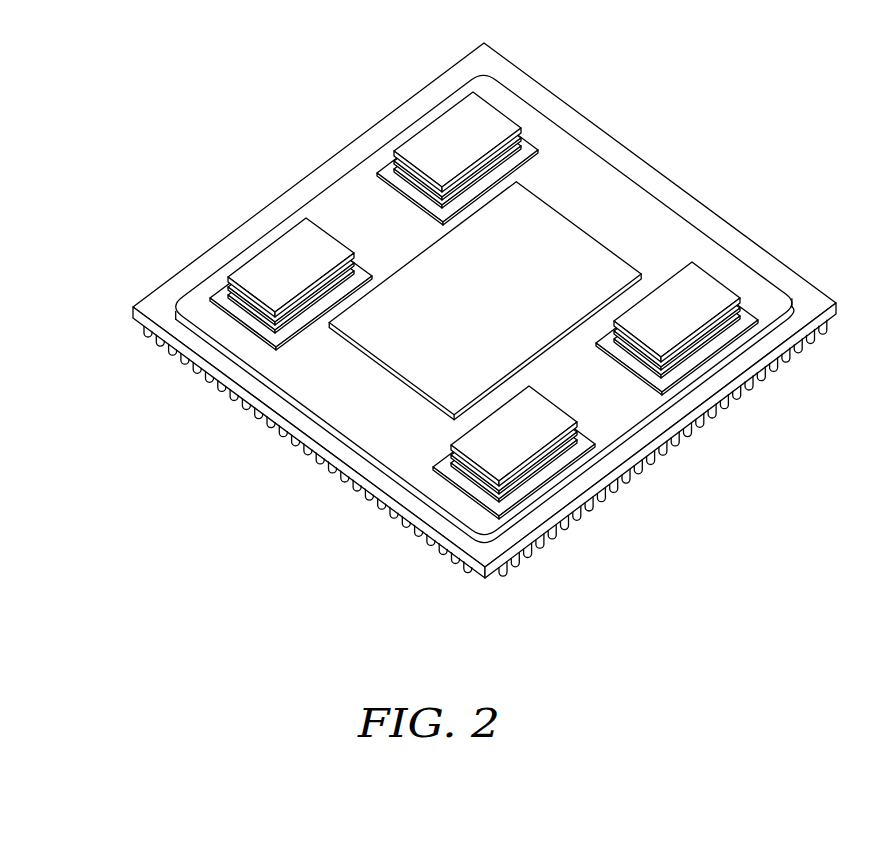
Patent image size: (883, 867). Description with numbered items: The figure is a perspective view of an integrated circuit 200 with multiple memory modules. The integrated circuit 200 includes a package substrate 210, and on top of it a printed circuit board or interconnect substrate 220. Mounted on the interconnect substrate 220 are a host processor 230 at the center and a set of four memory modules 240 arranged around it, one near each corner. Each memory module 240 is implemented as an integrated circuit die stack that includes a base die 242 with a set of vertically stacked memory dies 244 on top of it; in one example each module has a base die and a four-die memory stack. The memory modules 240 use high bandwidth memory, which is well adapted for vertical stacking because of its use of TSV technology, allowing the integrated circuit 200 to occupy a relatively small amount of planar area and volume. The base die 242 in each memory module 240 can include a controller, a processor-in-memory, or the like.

The integrated circuit 200 is at (454, 301).
The package substrate 210 is at (738, 230).
The printed circuit board or interconnect substrate 220 is at (610, 420).
The host processor 230 is at (545, 232).
The memory module 240 is at (494, 308).
The base die 242 is at (383, 170).
The vertically stacked memory dies 244 is at (482, 126).